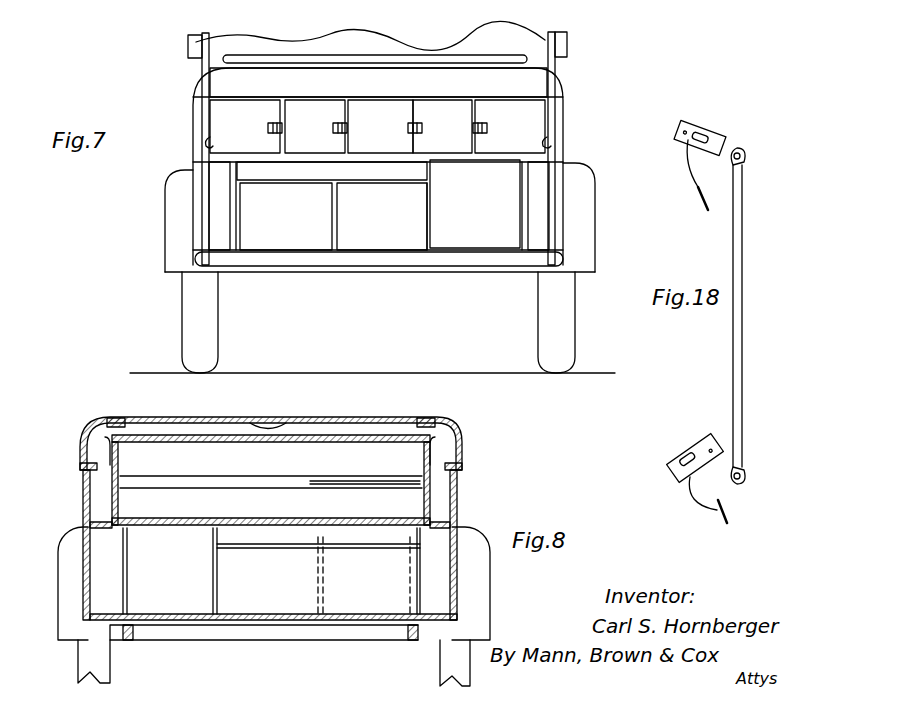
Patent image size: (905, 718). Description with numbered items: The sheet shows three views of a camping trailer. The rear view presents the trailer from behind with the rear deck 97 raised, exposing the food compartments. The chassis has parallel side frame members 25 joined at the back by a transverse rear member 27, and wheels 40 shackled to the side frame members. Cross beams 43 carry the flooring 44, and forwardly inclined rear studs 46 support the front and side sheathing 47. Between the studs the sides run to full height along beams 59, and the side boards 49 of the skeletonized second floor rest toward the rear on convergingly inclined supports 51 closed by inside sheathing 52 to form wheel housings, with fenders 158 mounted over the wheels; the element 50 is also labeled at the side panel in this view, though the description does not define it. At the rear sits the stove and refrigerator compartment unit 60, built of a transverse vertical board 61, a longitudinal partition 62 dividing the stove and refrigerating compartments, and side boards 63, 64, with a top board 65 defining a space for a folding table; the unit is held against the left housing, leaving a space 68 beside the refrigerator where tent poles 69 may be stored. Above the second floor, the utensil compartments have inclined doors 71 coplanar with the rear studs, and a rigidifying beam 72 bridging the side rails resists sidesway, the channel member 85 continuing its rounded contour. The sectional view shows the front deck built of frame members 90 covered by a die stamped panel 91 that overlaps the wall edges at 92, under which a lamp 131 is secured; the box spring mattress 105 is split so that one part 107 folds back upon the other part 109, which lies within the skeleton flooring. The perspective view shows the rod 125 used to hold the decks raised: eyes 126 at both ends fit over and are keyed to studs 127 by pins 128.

In FIG. 8, the side frame member 25 is at (130, 640).
In FIG. 8, the transverse rear member 27 is at (258, 635).
In FIG. 7, the wheel 40 is at (192, 330).
In FIG. 8, the wheel 40 is at (78, 662).
In FIG. 8, the cross beam 43 is at (300, 620).
In FIG. 7, the flooring 44 is at (372, 245).
In FIG. 8, the flooring 44 is at (275, 607).
In FIG. 18, the rear stud 46 is at (690, 462).
In FIG. 8, the front and side sheathing 47 is at (84, 516).
In FIG. 7, the side board 49 is at (210, 163).
In FIG. 8, the side board 49 is at (452, 515).
In FIG. 7, the side panel 50 is at (214, 188).
In FIG. 8, the inclined support 51 is at (110, 560).
In FIG. 7, the inside sheathing 52 is at (232, 204).
In FIG. 8, the inside sheathing 52 is at (128, 588).
In FIG. 8, the beam 59 is at (456, 490).
In FIG. 7, the stove and refrigerator compartment unit 60 is at (330, 257).
In FIG. 8, the transverse vertical board 61 is at (355, 600).
In FIG. 7, the partition 62 is at (340, 194).
In FIG. 8, the partition 62 is at (316, 583).
In FIG. 7, the side board 63 is at (243, 225).
In FIG. 7, the side board 64 is at (430, 229).
In FIG. 8, the side board 64 is at (214, 560).
In FIG. 7, the top board 65 is at (305, 180).
In FIG. 8, the top board 65 is at (290, 546).
In FIG. 7, the space 68 is at (487, 238).
In FIG. 8, the space 68 is at (187, 600).
In FIG. 8, the tent pole 69 is at (145, 417).
In FIG. 7, the door 71 is at (268, 111).
In FIG. 7, the rigidifying beam 72 is at (283, 80).
In FIG. 7, the channel member 85 is at (326, 60).
In FIG. 8, the frame member 90 is at (437, 420).
In FIG. 8, the die stamped panel 91 is at (203, 418).
In FIG. 8, the overlap 92 is at (82, 472).
In FIG. 7, the rear deck 97 is at (186, 40).
In FIG. 8, the box spring mattress 105 is at (333, 447).
In FIG. 8, the mattress part 107 is at (271, 465).
In FIG. 8, the mattress part 109 is at (271, 495).
In FIG. 7, the rod 125 is at (211, 42).
In FIG. 18, the rod 125 is at (733, 347).
In FIG. 18, the eye 126 is at (742, 150).
In FIG. 7, the stud 127 is at (206, 141).
In FIG. 18, the stud 127 is at (708, 140).
In FIG. 18, the pin 128 is at (704, 206).
In FIG. 8, the lamp 131 is at (268, 422).
In FIG. 7, the fender 158 is at (175, 242).
In FIG. 8, the fender 158 is at (65, 594).